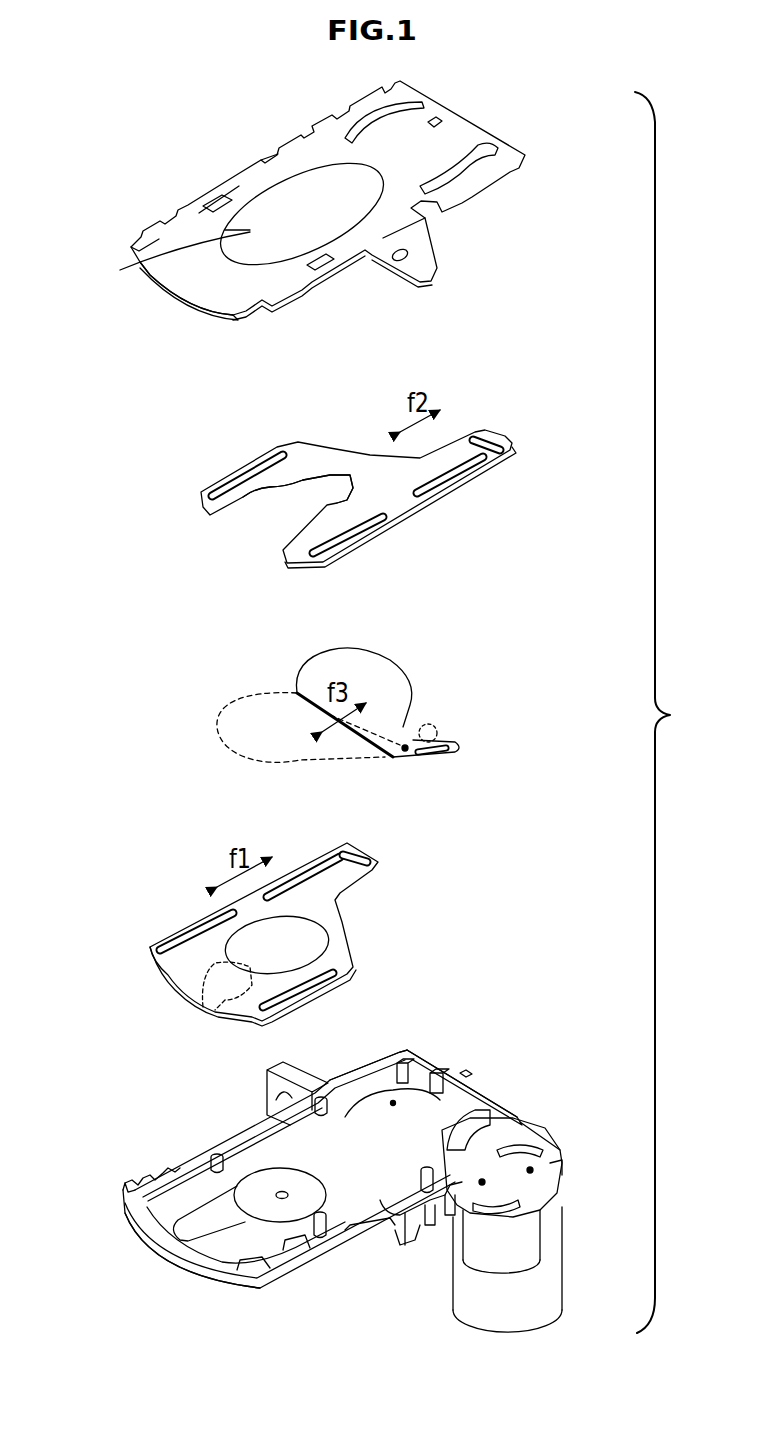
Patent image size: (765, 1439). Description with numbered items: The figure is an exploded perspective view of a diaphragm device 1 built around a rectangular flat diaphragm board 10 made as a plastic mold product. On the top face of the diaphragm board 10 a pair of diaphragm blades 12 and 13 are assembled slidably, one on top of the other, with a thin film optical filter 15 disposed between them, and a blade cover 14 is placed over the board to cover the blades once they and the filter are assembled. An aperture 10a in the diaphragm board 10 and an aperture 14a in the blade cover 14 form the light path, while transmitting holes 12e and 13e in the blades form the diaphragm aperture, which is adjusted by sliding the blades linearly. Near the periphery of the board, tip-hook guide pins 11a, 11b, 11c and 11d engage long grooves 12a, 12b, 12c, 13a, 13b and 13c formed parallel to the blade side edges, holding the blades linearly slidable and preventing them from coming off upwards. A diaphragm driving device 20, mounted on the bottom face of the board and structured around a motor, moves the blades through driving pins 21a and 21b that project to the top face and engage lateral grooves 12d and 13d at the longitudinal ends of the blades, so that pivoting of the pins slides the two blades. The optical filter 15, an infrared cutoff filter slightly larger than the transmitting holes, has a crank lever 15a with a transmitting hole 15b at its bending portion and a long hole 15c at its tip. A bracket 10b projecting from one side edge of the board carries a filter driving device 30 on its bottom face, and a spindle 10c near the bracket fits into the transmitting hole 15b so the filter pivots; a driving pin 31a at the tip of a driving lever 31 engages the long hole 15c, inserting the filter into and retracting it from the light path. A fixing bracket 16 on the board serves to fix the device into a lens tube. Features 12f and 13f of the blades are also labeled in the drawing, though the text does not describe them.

The diaphragm device 1 is at (664, 712).
The diaphragm board 10 is at (517, 1105).
The aperture 10a is at (173, 1245).
The bracket 10b is at (552, 1175).
The spindle 10c is at (390, 1223).
The guide pin 11a is at (420, 1167).
The guide pin 11b is at (317, 1227).
The guide pin 11c is at (268, 1110).
The guide pin 11d is at (200, 1153).
The diaphragm blade 12 is at (383, 843).
The long groove 12a is at (327, 990).
The long groove 12b is at (193, 933).
The long groove 12c is at (307, 870).
The lateral groove 12d is at (378, 865).
The transmitting hole 12e is at (305, 940).
The engaging portion 12f is at (207, 1010).
The diaphragm blade 13 is at (500, 430).
The long groove 13a is at (463, 487).
The long groove 13b is at (363, 547).
The long groove 13c is at (234, 476).
The lateral groove 13d is at (510, 447).
The transmitting hole 13e is at (263, 503).
The projection 13f is at (330, 478).
The blade cover 14 is at (493, 125).
The aperture 14a is at (145, 262).
The optical filter 15 is at (428, 660).
The crank lever 15a is at (432, 728).
The transmitting hole 15b is at (397, 760).
The long hole 15c is at (457, 757).
The fixing bracket 16 is at (287, 1066).
The diaphragm driving device 20 is at (452, 1062).
The driving pin 21a is at (407, 1060).
The driving pin 21b is at (460, 1090).
The filter driving device 30 is at (563, 1283).
The driving lever 31 is at (450, 1212).
The driving pin 31a is at (435, 1217).